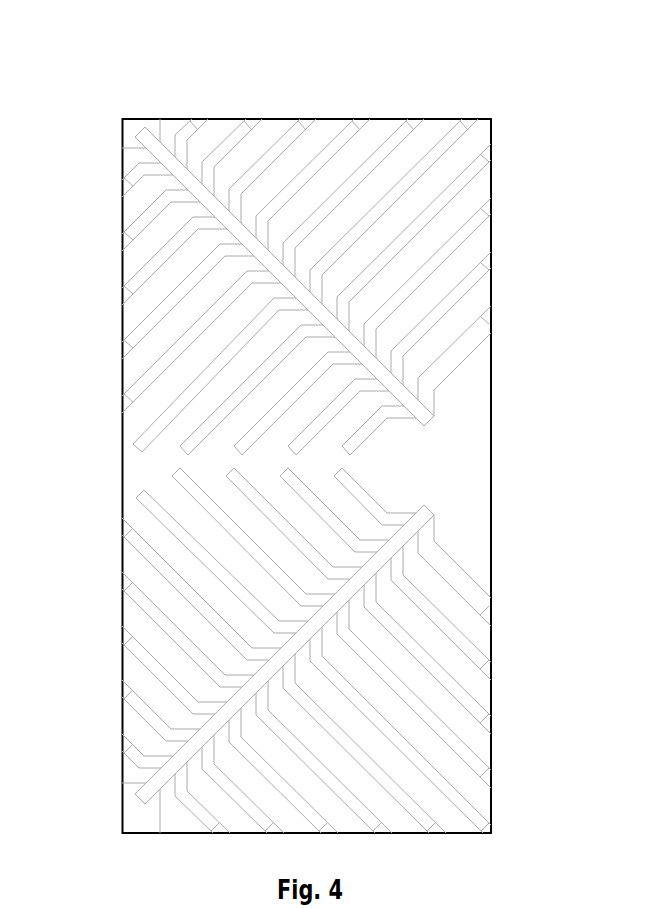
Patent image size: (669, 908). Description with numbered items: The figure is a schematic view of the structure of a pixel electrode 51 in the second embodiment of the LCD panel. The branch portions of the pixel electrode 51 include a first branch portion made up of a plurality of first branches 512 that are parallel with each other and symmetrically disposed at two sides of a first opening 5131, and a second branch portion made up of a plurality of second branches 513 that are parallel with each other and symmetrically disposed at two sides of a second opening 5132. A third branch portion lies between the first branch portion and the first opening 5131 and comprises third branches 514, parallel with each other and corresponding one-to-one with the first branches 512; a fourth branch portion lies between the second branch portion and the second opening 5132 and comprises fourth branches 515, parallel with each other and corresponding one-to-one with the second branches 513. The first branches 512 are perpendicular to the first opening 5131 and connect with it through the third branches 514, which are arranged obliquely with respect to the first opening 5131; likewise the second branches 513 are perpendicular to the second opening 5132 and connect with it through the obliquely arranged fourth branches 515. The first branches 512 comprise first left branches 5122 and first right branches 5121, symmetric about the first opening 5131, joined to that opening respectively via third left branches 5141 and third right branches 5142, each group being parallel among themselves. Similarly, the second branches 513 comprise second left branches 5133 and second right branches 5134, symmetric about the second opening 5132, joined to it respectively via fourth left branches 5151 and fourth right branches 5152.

The pixel electrode 51 is at (478, 256).
The first branches 512 is at (202, 259).
The first right branches 5121 is at (333, 150).
The first left branches 5122 is at (173, 305).
The second branches 513 is at (200, 555).
The first opening 5131 is at (400, 393).
The second opening 5132 is at (393, 547).
The second left branches 5133 is at (205, 490).
The second right branches 5134 is at (445, 612).
The third branches 514 is at (203, 157).
The third left branches 5141 is at (127, 383).
The third right branches 5142 is at (265, 220).
The fourth branches 515 is at (195, 746).
The fourth left branches 5151 is at (240, 684).
The fourth right branches 5152 is at (275, 706).